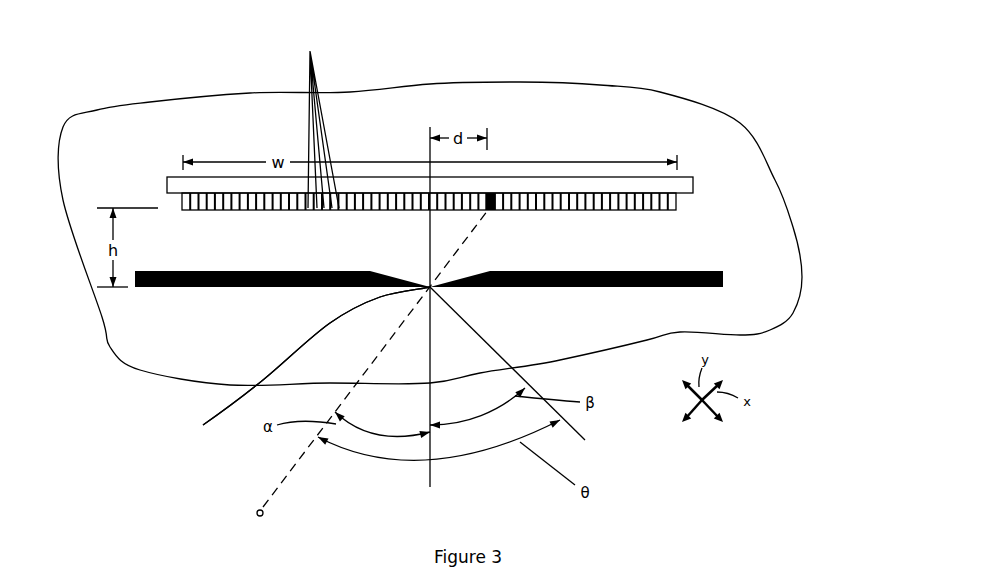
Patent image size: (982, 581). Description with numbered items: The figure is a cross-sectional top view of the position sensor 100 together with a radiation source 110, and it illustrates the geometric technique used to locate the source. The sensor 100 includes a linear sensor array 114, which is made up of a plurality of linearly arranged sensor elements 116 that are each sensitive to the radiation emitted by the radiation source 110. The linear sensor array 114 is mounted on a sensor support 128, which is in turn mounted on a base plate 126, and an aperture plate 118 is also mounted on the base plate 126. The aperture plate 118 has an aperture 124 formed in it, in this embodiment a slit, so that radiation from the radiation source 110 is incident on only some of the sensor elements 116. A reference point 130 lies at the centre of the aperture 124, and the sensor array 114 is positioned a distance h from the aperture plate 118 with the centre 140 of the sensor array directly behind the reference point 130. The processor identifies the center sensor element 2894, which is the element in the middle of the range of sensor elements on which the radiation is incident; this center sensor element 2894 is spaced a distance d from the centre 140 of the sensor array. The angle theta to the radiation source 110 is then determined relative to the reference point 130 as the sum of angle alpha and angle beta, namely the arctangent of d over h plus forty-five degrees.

The position sensor 100 is at (101, 380).
The radiation source 110 is at (262, 517).
The linear sensor array 114 is at (660, 202).
The sensor elements 116 is at (317, 119).
The aperture plate 118 is at (723, 287).
The aperture 124 is at (299, 368).
The base plate 126 is at (180, 362).
The sensor support 128 is at (668, 186).
The reference point 130 is at (299, 368).
The centre of the sensor array 140 is at (430, 177).
The center sensor element 2894 is at (487, 210).